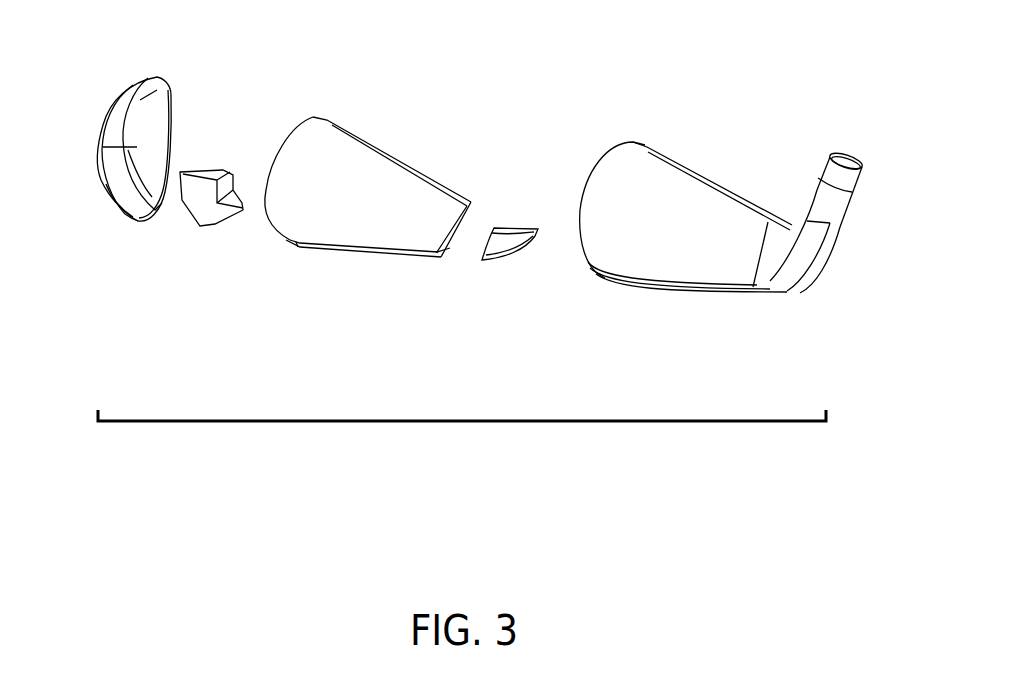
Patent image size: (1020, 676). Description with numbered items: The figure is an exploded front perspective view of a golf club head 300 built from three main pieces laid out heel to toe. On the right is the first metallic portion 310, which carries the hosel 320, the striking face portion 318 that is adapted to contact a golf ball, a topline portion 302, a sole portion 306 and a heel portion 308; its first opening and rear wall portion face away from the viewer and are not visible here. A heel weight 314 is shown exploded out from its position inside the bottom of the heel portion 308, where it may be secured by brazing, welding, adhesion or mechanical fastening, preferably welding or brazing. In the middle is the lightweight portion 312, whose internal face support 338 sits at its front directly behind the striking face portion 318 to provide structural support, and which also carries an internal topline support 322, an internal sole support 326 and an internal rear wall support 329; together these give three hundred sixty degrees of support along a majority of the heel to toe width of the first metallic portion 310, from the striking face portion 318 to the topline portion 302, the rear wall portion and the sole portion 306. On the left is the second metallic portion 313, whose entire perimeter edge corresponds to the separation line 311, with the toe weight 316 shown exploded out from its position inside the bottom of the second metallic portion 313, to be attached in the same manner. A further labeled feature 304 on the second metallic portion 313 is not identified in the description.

The golf club head 300 is at (462, 422).
The topline portion 302 is at (677, 160).
The face insert edge 304 is at (105, 193).
The sole portion 306 is at (677, 290).
The heel portion 308 is at (812, 275).
The first metallic portion 310 is at (783, 100).
The separation line 311 is at (100, 143).
The lightweight portion 312 is at (303, 101).
The second metallic portion 313 is at (95, 72).
The heel weight 314 is at (517, 232).
The toe weight 316 is at (197, 217).
The striking face portion 318 is at (698, 210).
The hosel 320 is at (852, 192).
The internal topline support 322 is at (365, 142).
The internal sole support 326 is at (358, 257).
The internal rear wall support 329 is at (452, 235).
The internal face support 338 is at (377, 182).